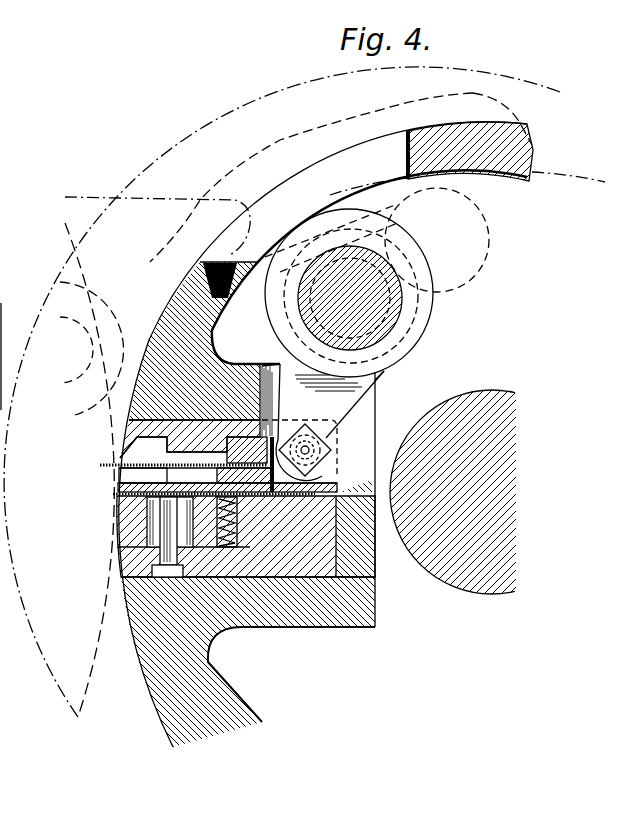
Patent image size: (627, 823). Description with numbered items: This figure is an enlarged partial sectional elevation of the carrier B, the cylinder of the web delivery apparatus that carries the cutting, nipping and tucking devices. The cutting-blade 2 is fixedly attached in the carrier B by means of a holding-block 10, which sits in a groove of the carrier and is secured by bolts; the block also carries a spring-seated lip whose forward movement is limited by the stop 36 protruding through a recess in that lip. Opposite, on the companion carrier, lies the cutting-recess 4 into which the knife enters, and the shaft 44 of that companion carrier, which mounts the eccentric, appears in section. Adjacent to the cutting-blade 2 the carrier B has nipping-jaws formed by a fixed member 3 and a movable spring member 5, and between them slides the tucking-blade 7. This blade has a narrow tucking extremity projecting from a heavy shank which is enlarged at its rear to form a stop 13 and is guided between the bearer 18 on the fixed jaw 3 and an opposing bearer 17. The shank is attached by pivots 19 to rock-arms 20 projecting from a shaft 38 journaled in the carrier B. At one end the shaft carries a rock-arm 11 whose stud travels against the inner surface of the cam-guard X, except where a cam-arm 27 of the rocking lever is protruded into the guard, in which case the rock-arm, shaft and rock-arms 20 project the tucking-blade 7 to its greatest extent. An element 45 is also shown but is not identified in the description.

The cutting-blade 2 is at (113, 494).
The fixed member of nipping-jaws 3 is at (122, 441).
The cutting-recess 4 is at (158, 476).
The movable member of nipping-jaws 5 is at (118, 482).
The tucking-blade 7 is at (175, 463).
The holding-block 10 is at (246, 537).
The rock-arm 11 is at (437, 240).
The stop 13 is at (247, 450).
The bearer 17 is at (234, 476).
The bearer 18 is at (189, 439).
The pivots 19 is at (299, 448).
The rock-arms 20 is at (323, 422).
The cam-arm 27 is at (342, 241).
The stop 36 is at (170, 537).
The shaft 38 is at (349, 293).
The shaft 44 is at (491, 492).
The wall 45 is at (146, 526).
The cam-guard X is at (169, 267).
The carrier B is at (449, 357).